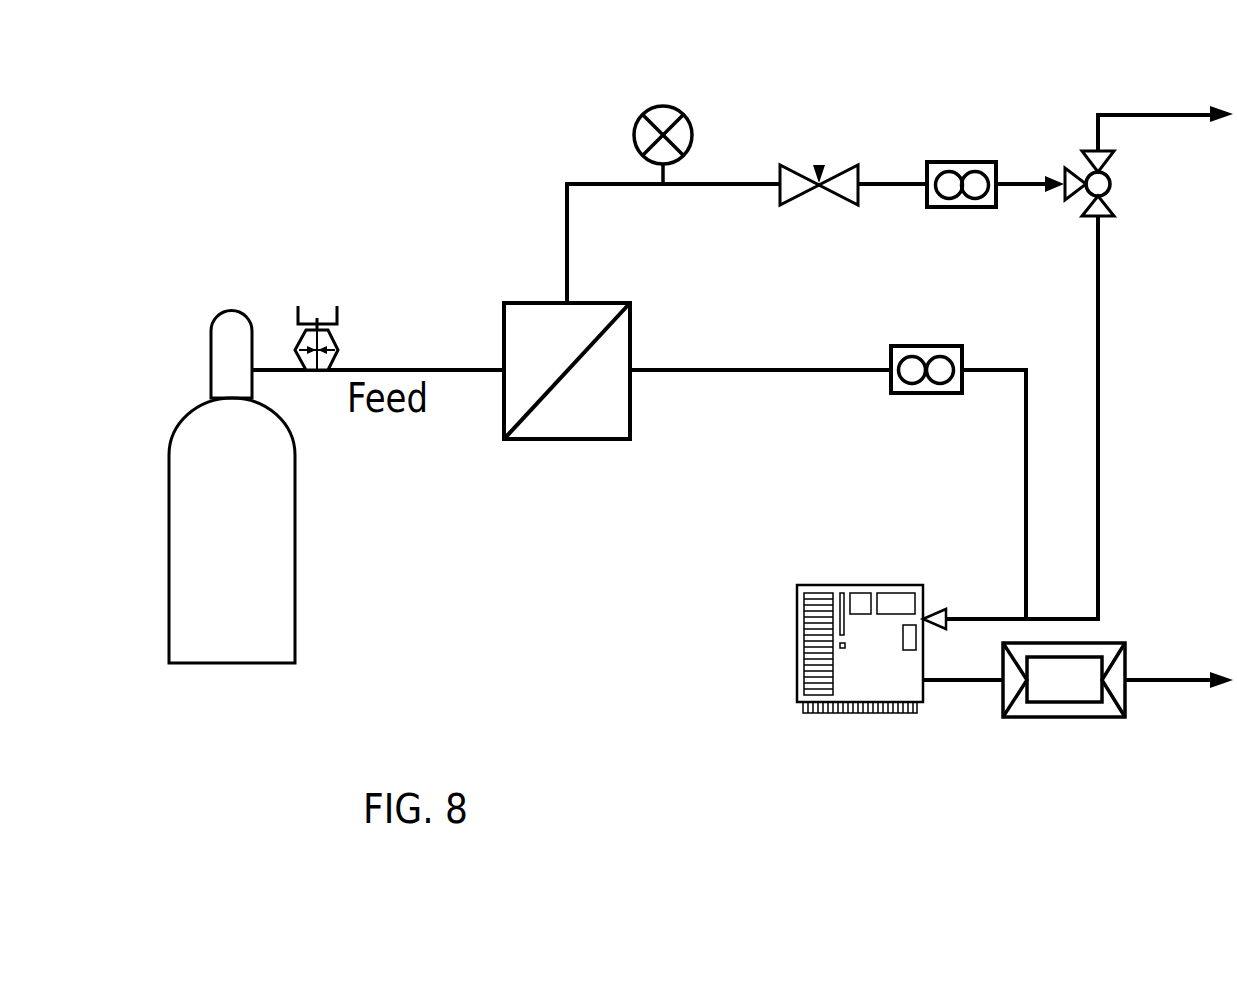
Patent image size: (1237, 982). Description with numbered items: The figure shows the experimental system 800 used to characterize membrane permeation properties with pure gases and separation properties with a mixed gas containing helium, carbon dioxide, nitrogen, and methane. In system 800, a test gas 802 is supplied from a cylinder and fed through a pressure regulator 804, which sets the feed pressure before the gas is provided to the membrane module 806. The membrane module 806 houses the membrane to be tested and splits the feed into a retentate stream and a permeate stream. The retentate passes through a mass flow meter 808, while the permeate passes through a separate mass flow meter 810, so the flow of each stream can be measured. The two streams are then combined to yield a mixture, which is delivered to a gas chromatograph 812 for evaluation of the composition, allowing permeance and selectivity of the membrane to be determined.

The system 800 is at (456, 106).
The test gas 802 is at (272, 588).
The pressure regulator 804 is at (321, 300).
The membrane module 806 is at (567, 429).
The mass flow meter 808 is at (970, 160).
The mass flow meter 810 is at (945, 395).
The gas chromatograph 812 is at (834, 714).